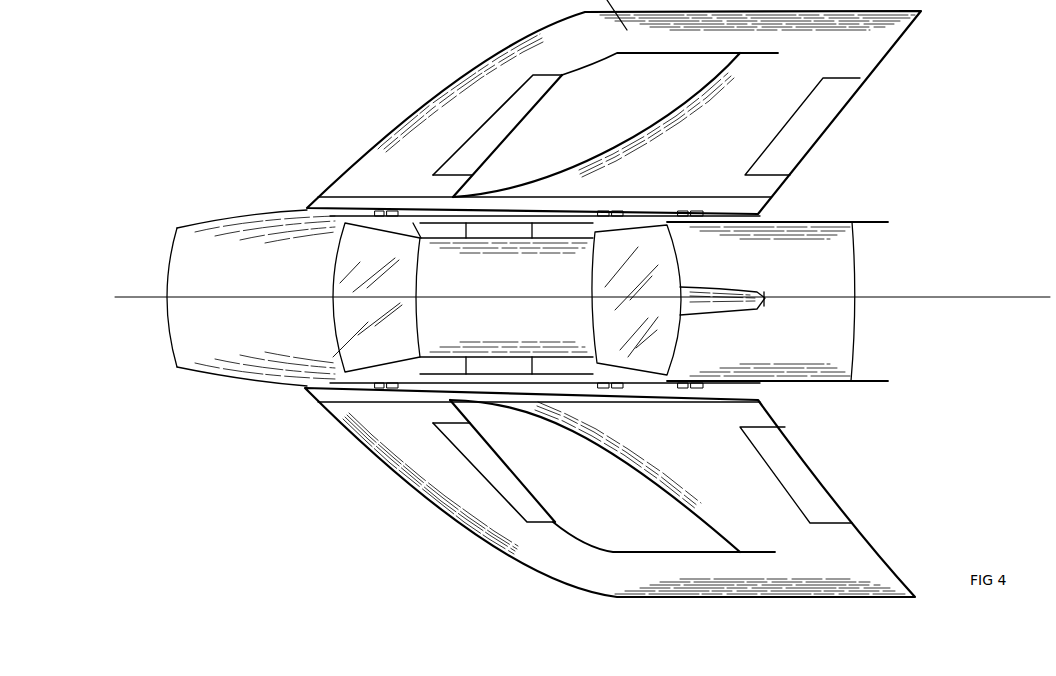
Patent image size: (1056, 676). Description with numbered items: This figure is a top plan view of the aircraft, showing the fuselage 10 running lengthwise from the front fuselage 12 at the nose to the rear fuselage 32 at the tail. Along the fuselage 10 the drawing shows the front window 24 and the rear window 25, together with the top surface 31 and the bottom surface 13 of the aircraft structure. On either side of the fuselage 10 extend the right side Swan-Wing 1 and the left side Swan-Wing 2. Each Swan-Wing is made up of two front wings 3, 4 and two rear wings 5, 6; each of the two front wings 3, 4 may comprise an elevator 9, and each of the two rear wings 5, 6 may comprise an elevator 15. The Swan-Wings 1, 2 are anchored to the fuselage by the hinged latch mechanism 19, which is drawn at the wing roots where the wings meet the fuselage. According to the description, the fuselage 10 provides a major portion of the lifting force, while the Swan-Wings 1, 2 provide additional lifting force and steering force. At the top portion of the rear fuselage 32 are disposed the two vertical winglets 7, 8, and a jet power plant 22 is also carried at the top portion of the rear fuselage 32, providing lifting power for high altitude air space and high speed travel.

The right side Swan-Wing 1 is at (760, 30).
The left side Swan-Wing 2 is at (707, 585).
The front wing 3 is at (447, 132).
The front wing 4 is at (428, 457).
The rear wing 5 is at (742, 128).
The rear wing 6 is at (750, 490).
The vertical winglet 7 is at (822, 225).
The vertical winglet 8 is at (840, 385).
The elevator 9 is at (497, 132).
The fuselage 10 is at (283, 220).
The front fuselage 12 is at (210, 273).
The bottom surface 13 is at (438, 15).
The elevator 15 is at (822, 105).
The hinged latch mechanism 19 is at (388, 211).
The jet power plant 22 is at (783, 300).
The front window 24 is at (307, 388).
The rear window 25 is at (620, 353).
The top surface 31 is at (468, 330).
The rear fuselage 32 is at (822, 265).